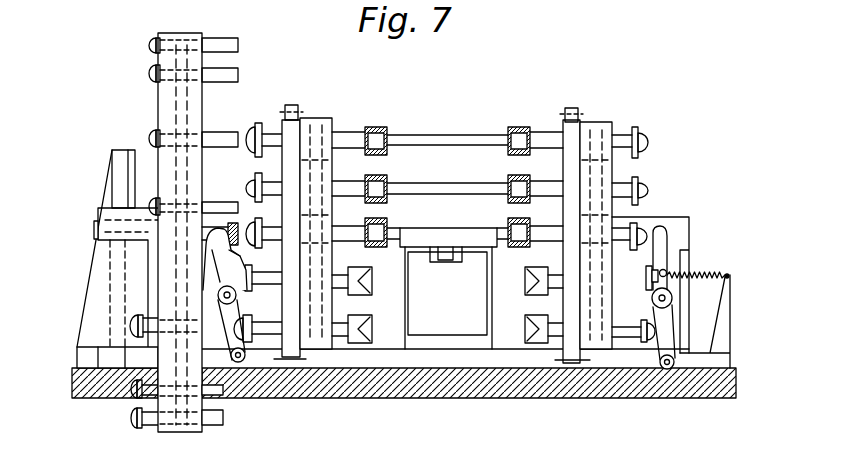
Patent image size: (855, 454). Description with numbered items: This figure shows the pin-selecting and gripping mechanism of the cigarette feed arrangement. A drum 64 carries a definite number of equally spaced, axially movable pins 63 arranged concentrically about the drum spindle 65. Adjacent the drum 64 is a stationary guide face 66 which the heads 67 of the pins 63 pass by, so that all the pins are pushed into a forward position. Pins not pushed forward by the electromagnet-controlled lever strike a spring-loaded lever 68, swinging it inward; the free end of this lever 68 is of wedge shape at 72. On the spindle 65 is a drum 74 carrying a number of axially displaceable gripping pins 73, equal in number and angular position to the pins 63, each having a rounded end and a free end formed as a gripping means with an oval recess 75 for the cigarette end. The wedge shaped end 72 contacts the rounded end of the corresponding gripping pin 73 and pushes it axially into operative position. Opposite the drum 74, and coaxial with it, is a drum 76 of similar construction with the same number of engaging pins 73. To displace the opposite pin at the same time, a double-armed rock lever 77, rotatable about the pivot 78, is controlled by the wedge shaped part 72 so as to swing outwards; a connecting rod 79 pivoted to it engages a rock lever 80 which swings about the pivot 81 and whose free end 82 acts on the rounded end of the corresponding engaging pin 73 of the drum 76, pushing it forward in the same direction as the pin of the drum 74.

The longitudinally movable pin 63 is at (233, 47).
The drum 64 is at (170, 102).
The drum spindle 65 is at (97, 237).
The stationary guide face 66 is at (157, 205).
The head 67 is at (149, 44).
The lever 68 is at (231, 235).
The wedge shaped end 72 is at (234, 256).
The gripping pin 73 is at (347, 138).
The drum 74 is at (315, 128).
The oval recess 75 is at (378, 136).
The drum 76 is at (595, 133).
The rock lever 77 is at (220, 278).
The pivot 78 is at (236, 298).
The connecting rod 79 is at (497, 360).
The rock lever 80 is at (662, 264).
The pivot 81 is at (668, 302).
The free end 82 is at (651, 230).